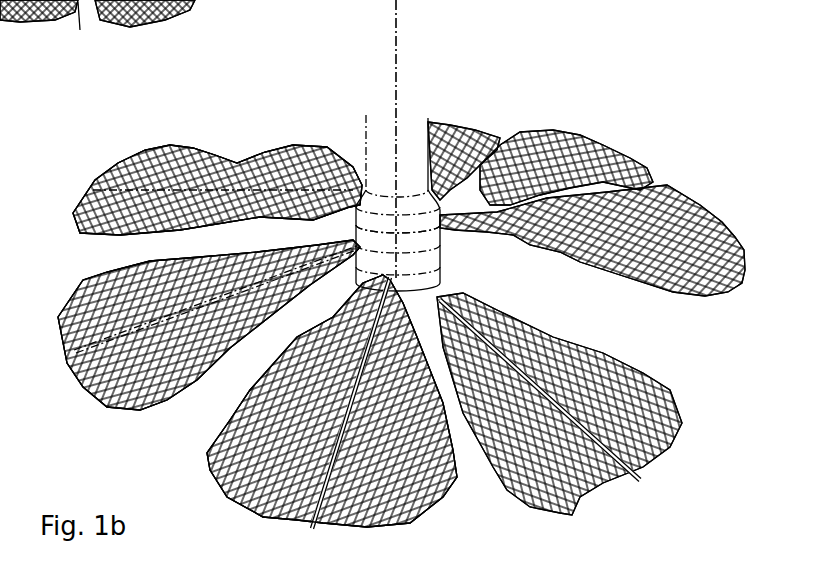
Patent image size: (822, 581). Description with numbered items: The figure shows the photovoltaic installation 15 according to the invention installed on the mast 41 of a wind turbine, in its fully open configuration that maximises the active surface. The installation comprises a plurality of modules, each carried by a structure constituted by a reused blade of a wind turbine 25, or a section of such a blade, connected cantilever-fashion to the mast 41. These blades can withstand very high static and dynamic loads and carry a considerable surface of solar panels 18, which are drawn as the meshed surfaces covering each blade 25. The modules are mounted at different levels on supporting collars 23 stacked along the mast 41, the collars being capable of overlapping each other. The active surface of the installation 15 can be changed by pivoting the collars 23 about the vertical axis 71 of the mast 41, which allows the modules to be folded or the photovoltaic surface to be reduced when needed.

The photovoltaic installation 15 is at (592, 78).
The photovoltaic panels 18 is at (185, 153).
The pivotable collar 23 is at (395, 225).
The reused blade of wind turbine 25 is at (130, 180).
The mast 41 is at (383, 128).
The vertical axis 71 is at (396, 62).